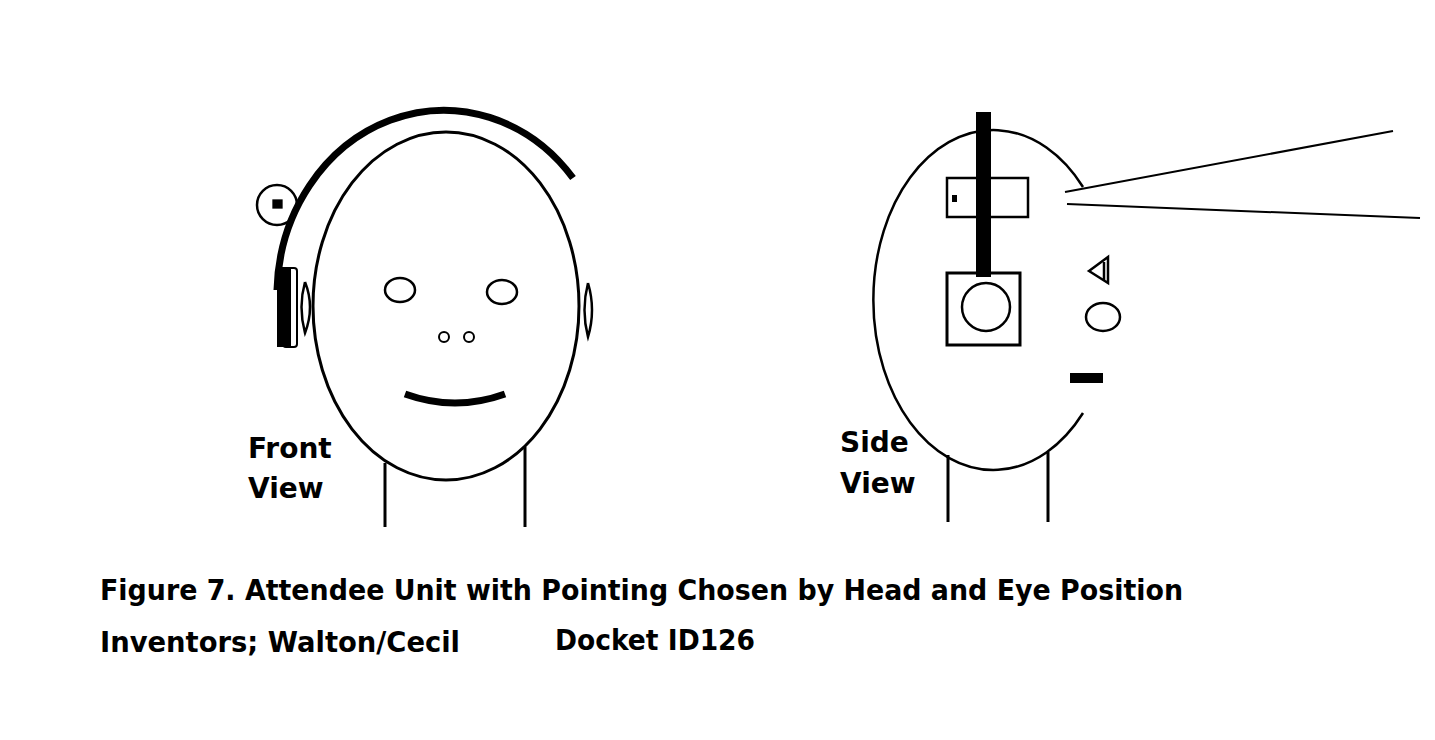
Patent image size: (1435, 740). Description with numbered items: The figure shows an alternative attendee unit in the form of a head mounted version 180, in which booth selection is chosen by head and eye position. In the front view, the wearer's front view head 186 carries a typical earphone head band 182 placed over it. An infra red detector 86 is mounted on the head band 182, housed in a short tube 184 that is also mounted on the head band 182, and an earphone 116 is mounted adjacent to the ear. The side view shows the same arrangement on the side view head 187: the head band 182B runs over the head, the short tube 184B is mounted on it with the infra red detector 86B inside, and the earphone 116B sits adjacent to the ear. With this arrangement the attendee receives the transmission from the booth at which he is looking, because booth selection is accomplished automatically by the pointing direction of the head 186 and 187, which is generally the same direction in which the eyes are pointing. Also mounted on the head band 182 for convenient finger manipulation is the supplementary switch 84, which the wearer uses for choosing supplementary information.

The head mounted version of the attendee unit 180 is at (330, 257).
The earphone head band 182 is at (420, 108).
The short tube 184 is at (256, 176).
The infra red detector 86 is at (270, 205).
The front view head 186 is at (493, 142).
The earphone 116 is at (279, 336).
The earphone head band 182B is at (975, 122).
The side view head 187 is at (1000, 133).
The short tube 184B is at (966, 162).
The infra red detector 86B is at (947, 197).
The supplementary switch 84 is at (964, 178).
The earphone 116B is at (947, 325).